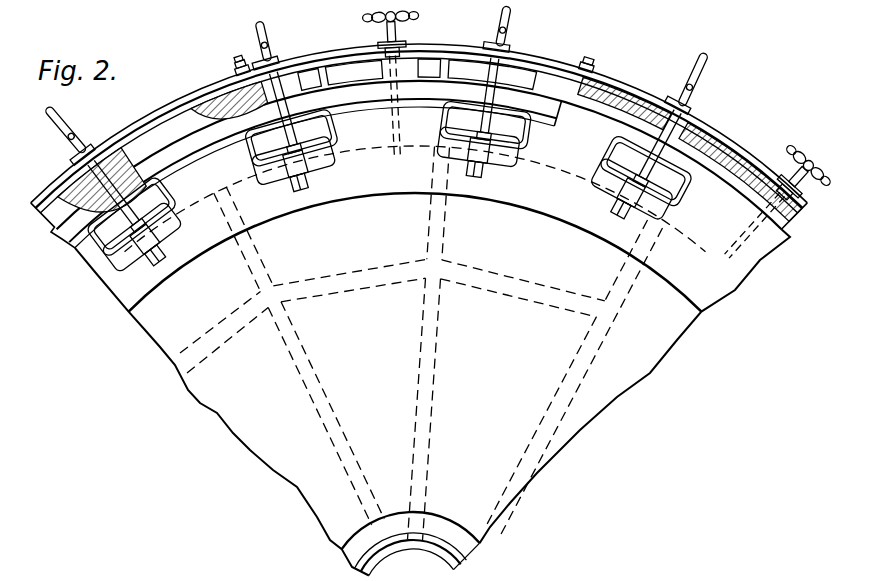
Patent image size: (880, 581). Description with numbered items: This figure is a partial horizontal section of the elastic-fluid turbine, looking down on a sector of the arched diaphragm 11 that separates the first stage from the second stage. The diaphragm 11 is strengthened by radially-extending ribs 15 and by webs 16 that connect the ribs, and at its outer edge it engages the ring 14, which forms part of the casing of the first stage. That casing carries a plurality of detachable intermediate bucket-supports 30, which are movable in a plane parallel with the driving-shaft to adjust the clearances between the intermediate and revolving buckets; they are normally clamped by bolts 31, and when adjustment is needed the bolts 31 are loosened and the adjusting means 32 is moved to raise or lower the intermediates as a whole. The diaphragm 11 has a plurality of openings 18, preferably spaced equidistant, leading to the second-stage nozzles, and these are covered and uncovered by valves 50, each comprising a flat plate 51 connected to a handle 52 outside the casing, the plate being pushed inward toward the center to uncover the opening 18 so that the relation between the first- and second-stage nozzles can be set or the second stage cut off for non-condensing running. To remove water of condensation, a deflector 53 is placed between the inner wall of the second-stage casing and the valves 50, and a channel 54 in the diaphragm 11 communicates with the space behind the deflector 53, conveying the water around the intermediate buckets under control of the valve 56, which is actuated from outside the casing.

The diaphragm 11 is at (545, 444).
The ring 14 is at (178, 117).
The radially-extending ribs 15 is at (425, 378).
The webs 16 is at (514, 288).
The openings 18 is at (457, 118).
The detachable intermediate bucket-supports 30 is at (322, 58).
The bolts 31 is at (252, 66).
The adjusting means 32 is at (239, 78).
The valves 50 is at (152, 185).
The flat plate 51 is at (268, 172).
The handle 52 is at (262, 42).
The deflector 53 is at (125, 279).
The channel 54 is at (388, 150).
The valve 56 is at (403, 24).